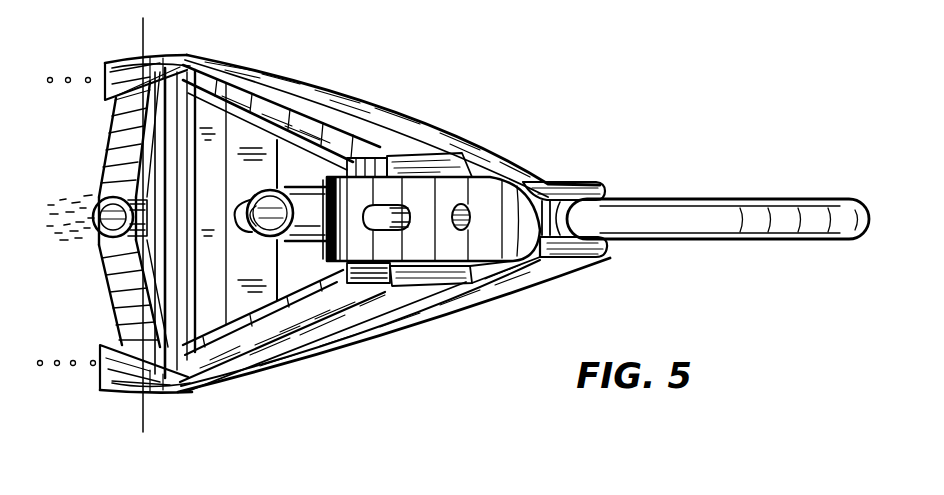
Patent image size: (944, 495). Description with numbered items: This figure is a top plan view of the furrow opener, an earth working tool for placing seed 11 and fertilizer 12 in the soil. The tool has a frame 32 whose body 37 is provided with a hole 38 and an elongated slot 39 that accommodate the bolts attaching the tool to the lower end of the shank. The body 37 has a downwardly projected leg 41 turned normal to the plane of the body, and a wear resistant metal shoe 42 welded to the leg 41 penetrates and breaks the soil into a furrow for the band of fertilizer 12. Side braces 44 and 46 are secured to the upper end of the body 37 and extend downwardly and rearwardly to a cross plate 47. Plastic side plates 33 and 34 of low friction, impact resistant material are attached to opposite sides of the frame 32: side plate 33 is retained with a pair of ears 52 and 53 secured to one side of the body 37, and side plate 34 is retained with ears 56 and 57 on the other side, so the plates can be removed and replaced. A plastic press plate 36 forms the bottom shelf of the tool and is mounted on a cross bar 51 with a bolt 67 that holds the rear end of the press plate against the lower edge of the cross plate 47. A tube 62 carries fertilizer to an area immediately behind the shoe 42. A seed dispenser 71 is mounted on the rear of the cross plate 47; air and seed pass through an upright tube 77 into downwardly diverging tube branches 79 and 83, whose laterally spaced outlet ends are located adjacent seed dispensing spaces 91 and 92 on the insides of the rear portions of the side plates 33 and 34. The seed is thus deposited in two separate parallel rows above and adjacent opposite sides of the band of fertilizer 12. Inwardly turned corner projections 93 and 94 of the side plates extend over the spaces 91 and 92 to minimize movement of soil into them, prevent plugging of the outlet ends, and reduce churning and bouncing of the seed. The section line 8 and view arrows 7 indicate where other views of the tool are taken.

The view direction arrow 7 is at (60, 220).
The section line 8 is at (136, 30).
The seed 11 is at (68, 83).
The fertilizer 12 is at (45, 240).
The frame 32 is at (370, 153).
The side plate 33 is at (413, 312).
The side plate 34 is at (350, 113).
The press plate 36 is at (207, 315).
The body 37 is at (485, 195).
The hole 38 is at (468, 222).
The elongated slot 39 is at (388, 218).
The leg 41 is at (558, 212).
The shoe 42 is at (748, 206).
The side brace 44 is at (270, 103).
The side brace 46 is at (305, 313).
The cross plate 47 is at (185, 175).
The cross bar 51 is at (257, 268).
The ear 52 is at (461, 286).
The ear 53 is at (580, 256).
The ear 56 is at (427, 163).
The ear 57 is at (553, 184).
The tube 62 is at (318, 200).
The bolt 67 is at (236, 205).
The seed dispenser 71 is at (104, 137).
The upright tube 77 is at (105, 237).
The tube branch 79 is at (122, 155).
The tube branch 83 is at (118, 280).
The seed dispensing space 91 is at (157, 82).
The seed dispensing space 92 is at (158, 374).
The corner projection 93 is at (105, 63).
The corner projection 94 is at (100, 382).